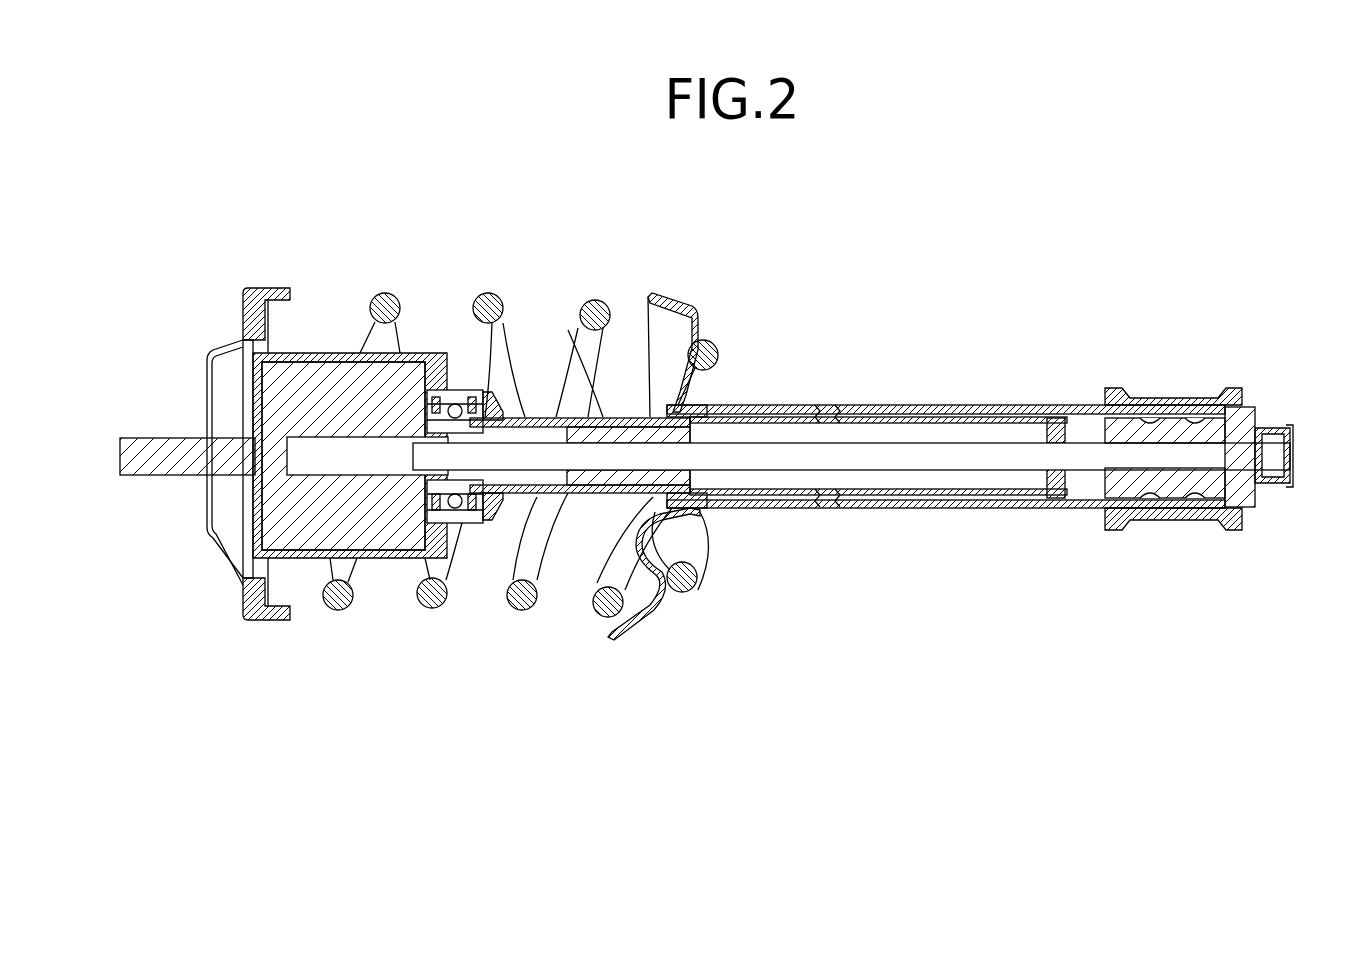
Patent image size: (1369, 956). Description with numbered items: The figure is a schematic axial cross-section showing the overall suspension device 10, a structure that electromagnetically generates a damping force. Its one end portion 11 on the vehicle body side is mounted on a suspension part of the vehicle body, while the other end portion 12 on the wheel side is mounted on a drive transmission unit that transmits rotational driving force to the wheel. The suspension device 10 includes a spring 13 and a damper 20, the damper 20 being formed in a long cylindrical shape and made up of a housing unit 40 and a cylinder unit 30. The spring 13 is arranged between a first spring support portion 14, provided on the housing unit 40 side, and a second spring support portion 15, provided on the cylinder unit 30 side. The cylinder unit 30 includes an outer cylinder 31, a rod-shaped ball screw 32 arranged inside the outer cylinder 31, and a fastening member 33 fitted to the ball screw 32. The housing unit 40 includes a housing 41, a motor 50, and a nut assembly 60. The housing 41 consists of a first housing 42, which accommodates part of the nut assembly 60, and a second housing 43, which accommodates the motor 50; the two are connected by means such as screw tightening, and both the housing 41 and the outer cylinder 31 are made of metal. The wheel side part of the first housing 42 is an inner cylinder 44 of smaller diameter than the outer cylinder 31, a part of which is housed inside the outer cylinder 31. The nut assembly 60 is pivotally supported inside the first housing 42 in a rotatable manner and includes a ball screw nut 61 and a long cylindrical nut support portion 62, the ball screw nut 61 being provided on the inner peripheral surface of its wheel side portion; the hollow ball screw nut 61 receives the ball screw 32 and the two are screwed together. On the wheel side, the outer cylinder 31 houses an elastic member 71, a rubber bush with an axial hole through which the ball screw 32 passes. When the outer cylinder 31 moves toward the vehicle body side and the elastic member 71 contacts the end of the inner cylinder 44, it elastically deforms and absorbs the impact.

The suspension device 10 is at (237, 257).
The one end portion 11 is at (120, 458).
The other end portion 12 is at (1295, 455).
The spring 13 is at (600, 300).
The first spring support portion 14 is at (272, 290).
The second spring support portion 15 is at (673, 300).
The damper 20 is at (834, 344).
The cylinder unit 30 is at (877, 536).
The outer cylinder 31 is at (960, 508).
The ball screw 32 is at (963, 450).
The fastening member 33 is at (1243, 415).
The housing unit 40 is at (318, 575).
The housing 41 is at (432, 253).
The first housing 42 is at (423, 356).
The second housing 43 is at (318, 352).
The inner cylinder 44 is at (918, 418).
The motor 50 is at (370, 520).
The nut assembly 60 is at (580, 255).
The ball screw nut 61 is at (562, 417).
The nut support portion 62 is at (525, 417).
The elastic member 71 is at (1168, 510).